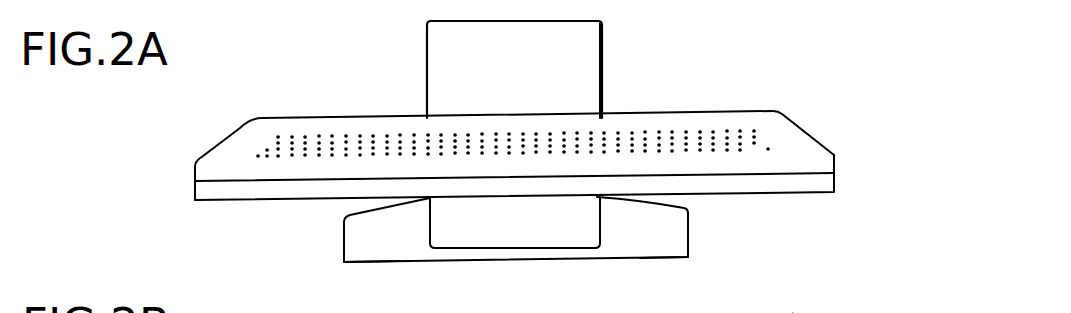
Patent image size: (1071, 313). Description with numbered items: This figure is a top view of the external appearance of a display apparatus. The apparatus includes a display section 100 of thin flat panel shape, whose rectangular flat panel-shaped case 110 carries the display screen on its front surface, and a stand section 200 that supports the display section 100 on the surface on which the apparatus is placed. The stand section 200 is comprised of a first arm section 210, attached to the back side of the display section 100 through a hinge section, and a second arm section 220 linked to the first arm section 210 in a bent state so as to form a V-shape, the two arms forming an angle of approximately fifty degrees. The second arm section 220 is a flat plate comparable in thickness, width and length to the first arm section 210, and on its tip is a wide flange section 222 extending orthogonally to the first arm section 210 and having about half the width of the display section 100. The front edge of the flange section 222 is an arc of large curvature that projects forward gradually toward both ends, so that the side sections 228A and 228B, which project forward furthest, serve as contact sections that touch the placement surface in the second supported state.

In FIG. 2A, the display section 100 is at (565, 140).
In FIG. 2A, the case 110 is at (771, 132).
In FIG. 2B, the case 110 is at (793, 312).
In FIG. 2A, the stand section 200 is at (551, 156).
In FIG. 2A, the first arm section 210 is at (580, 88).
In FIG. 2A, the second arm section 220 is at (535, 235).
In FIG. 2A, the flange section 222 is at (675, 235).
In FIG. 2A, the side section 228A is at (687, 263).
In FIG. 2A, the side section 228B is at (345, 263).